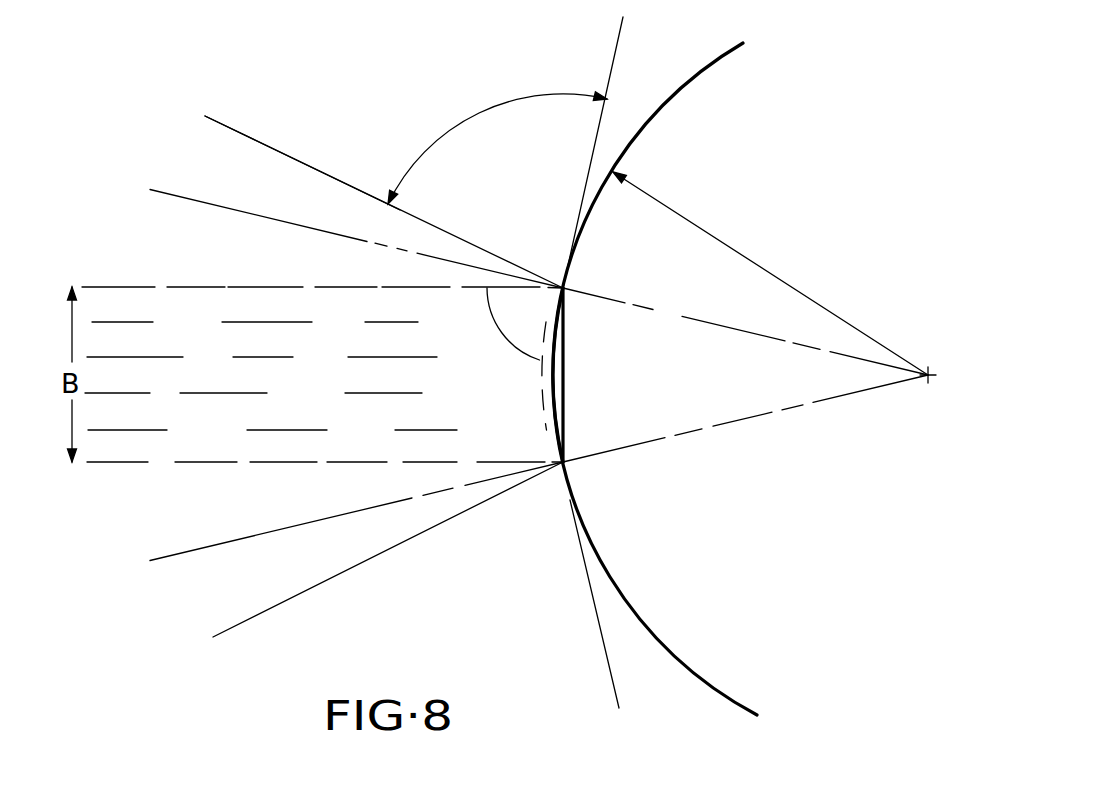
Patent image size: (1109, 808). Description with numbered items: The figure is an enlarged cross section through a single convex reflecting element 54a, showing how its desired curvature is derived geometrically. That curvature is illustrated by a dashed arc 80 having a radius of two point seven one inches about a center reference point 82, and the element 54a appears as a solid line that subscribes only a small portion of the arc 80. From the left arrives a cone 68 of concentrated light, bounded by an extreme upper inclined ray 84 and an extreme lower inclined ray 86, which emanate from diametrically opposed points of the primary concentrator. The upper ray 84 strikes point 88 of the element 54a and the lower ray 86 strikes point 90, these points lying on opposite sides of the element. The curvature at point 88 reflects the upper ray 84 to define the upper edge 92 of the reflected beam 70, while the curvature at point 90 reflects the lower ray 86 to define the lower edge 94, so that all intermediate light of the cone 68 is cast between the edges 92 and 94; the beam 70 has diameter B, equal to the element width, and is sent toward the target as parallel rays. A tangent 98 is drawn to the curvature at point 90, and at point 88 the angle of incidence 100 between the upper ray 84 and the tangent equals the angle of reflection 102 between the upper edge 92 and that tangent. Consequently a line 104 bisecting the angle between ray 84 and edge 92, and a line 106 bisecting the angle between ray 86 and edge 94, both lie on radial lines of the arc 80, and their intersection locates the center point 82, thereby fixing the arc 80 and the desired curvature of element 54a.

The convex reflecting element 54a is at (568, 382).
The cone of concentrated light 68 is at (305, 160).
The light beam 70 is at (82, 286).
The dashed arc 80 is at (684, 86).
The center reference point 82 is at (925, 382).
The upper inclined ray 84 is at (213, 118).
The lower inclined ray 86 is at (310, 589).
The point 88 is at (574, 287).
The point 90 is at (573, 466).
The upper edge 92 is at (222, 258).
The lower edge 94 is at (195, 461).
The tangent 98 is at (595, 625).
The angle of incidence 100 is at (465, 120).
The angle of reflection 102 is at (502, 335).
The bisecting line 104 is at (165, 190).
The bisecting line 106 is at (208, 543).